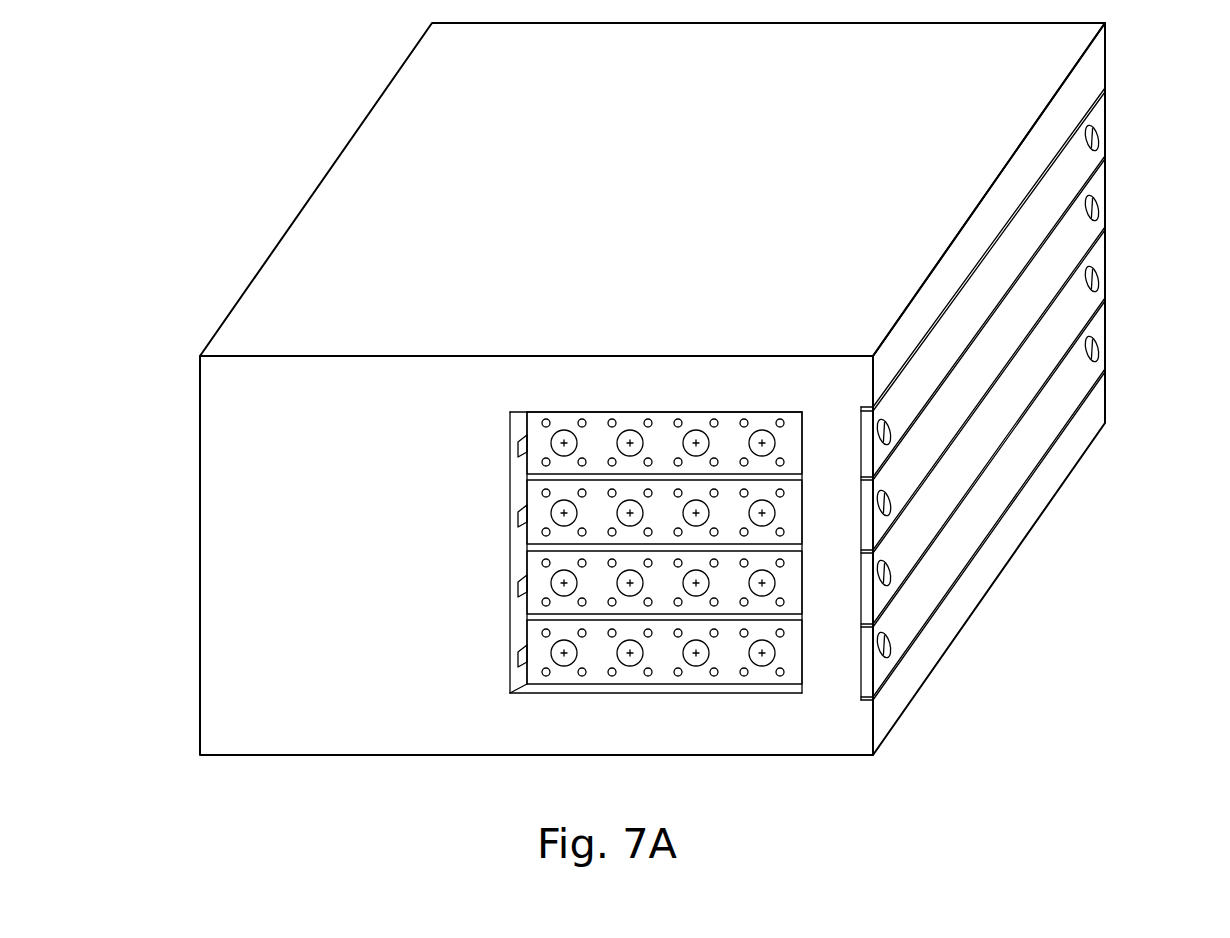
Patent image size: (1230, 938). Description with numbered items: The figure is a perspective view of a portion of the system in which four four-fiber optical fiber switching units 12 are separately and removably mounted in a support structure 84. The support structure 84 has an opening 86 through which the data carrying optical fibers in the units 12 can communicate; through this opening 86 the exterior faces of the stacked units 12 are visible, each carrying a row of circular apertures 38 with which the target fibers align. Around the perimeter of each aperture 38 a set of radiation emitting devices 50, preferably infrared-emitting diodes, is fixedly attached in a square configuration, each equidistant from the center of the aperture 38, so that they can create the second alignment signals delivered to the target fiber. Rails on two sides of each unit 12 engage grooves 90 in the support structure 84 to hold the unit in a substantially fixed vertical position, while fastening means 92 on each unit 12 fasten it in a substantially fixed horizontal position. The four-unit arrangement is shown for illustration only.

The optical fiber switching unit 12 is at (1093, 326).
The aperture 38 is at (761, 430).
The radiation emitting devices 50 is at (678, 421).
The support structure 84 is at (222, 410).
The opening 86 is at (509, 495).
The grooves 90 is at (518, 590).
The fastening means 92 is at (1093, 118).